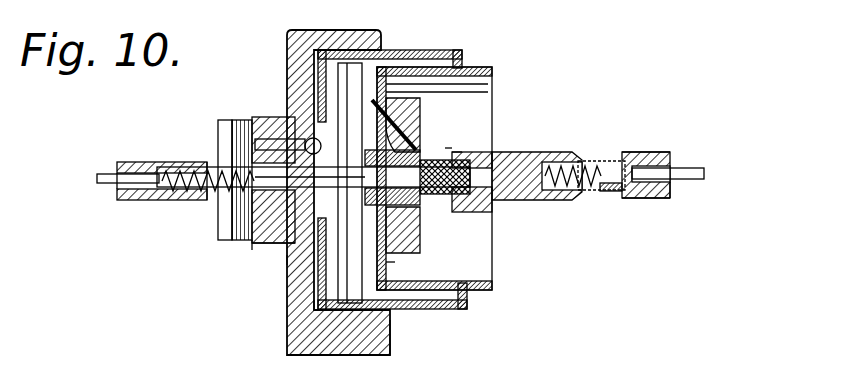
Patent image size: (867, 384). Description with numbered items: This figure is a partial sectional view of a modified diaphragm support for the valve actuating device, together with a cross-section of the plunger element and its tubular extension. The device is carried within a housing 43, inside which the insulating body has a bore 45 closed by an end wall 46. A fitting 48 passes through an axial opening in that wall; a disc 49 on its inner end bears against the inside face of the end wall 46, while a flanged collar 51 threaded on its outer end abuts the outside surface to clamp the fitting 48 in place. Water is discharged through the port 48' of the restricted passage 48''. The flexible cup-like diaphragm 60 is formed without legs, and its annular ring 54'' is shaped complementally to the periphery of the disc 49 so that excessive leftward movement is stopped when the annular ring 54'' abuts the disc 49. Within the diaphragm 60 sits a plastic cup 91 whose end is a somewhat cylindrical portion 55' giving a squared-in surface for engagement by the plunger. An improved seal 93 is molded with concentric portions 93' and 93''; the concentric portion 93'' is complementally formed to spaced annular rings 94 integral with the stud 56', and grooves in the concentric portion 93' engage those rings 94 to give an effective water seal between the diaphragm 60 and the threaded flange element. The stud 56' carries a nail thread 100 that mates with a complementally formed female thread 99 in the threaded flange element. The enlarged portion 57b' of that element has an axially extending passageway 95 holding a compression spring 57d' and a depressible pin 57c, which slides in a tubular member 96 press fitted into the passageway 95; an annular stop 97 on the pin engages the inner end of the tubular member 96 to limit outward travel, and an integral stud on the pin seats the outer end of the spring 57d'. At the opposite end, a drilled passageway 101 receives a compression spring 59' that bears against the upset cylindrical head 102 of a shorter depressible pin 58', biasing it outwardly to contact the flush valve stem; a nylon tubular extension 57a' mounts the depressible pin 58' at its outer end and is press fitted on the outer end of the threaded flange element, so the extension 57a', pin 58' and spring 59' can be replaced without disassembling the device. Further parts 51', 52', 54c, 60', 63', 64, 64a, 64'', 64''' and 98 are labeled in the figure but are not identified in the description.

The housing 43 is at (365, 30).
The bore 45 is at (383, 46).
The end wall 46 is at (287, 318).
The fitting 48 is at (227, 264).
The port 48' is at (375, 210).
The restricted passage 48'' is at (199, 184).
The disc 49 is at (287, 296).
The flanged collar 51 is at (244, 256).
The retainer 51' is at (259, 275).
The shaft 52' is at (313, 177).
The annular ring 54'' is at (322, 343).
The cup wall 54c is at (386, 265).
The cylindrical portion 55' is at (437, 99).
The stud 56' is at (445, 200).
The tubular extension 57a' is at (162, 164).
The enlarged portion 57b' is at (646, 158).
The depressible pin 57c is at (690, 168).
The compression spring 57d' is at (598, 154).
The depressible pin 58' is at (116, 202).
The compression spring 59' is at (208, 180).
The flexible cup-like diaphragm 60 is at (405, 170).
The cover piece 60' is at (617, 211).
The member 63' is at (486, 121).
The boss 64 is at (239, 170).
The arm 64a is at (385, 105).
The plate 64'' is at (302, 183).
The pin 64''' is at (328, 141).
The plastic cup 91 is at (492, 82).
The seal 93 is at (419, 125).
The concentric portion 93' is at (424, 234).
The concentric portion 93'' is at (410, 147).
The spaced annular rings 94 is at (466, 152).
The axially extending passageway 95 is at (672, 196).
The tubular member 96 is at (670, 156).
The annular stop 97 is at (652, 200).
The spring 98 is at (596, 200).
The female thread 99 is at (478, 210).
The nail thread 100 is at (500, 150).
The drilled passageway 101 is at (218, 162).
The upset cylindrical head 102 is at (145, 202).